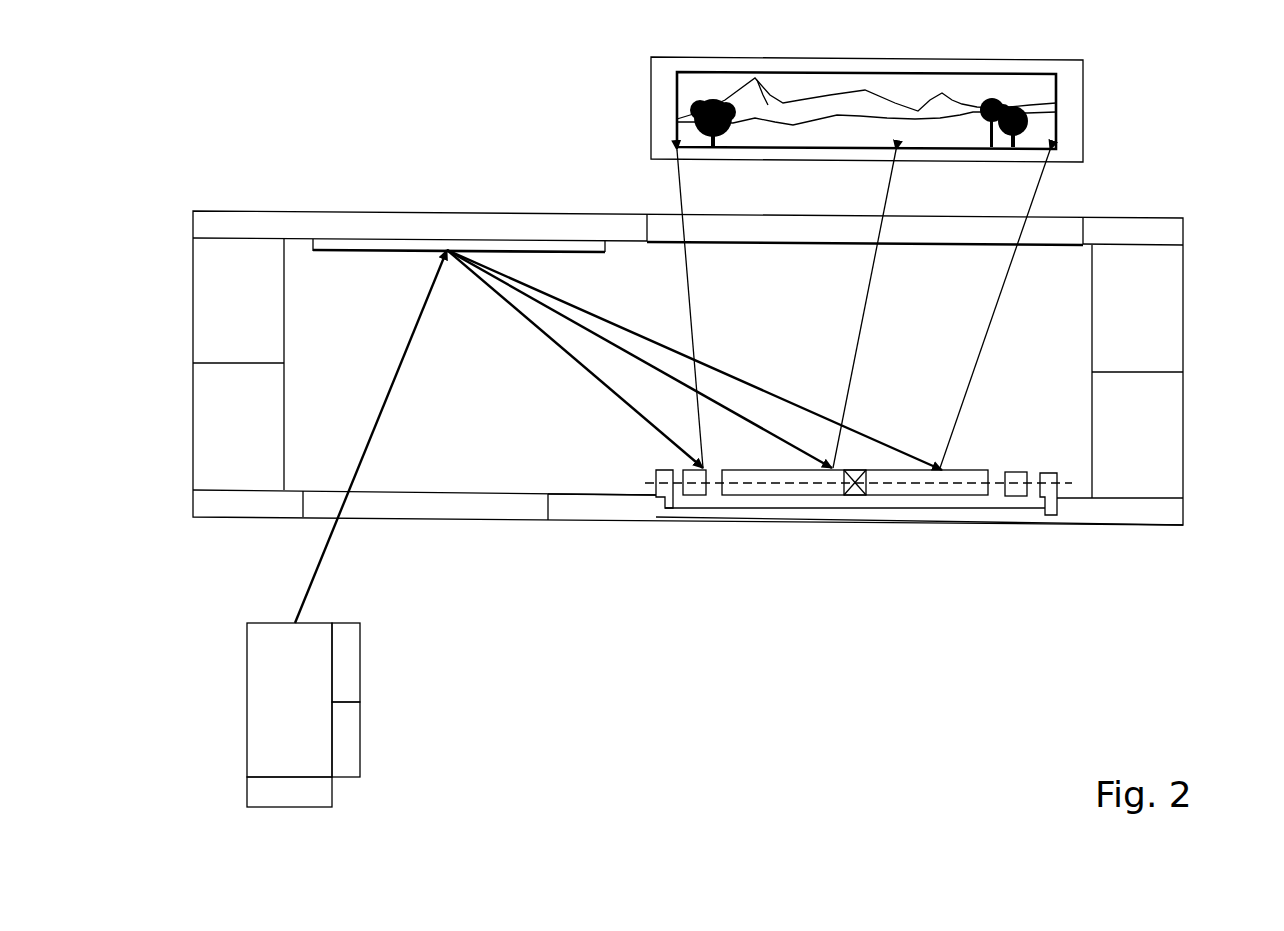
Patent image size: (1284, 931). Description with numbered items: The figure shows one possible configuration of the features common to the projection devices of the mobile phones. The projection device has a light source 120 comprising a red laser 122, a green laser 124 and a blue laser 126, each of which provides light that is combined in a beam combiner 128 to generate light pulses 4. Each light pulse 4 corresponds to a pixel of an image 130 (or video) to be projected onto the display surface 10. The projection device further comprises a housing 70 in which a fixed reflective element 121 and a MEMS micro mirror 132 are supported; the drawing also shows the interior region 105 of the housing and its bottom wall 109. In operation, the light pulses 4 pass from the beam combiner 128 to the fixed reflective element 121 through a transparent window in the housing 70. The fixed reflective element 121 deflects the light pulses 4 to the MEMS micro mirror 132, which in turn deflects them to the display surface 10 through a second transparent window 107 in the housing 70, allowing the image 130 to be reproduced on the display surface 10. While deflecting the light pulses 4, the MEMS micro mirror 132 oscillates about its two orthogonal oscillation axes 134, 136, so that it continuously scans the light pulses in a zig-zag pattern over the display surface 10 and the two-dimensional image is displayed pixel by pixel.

The light pulses 4 is at (380, 413).
The display surface 10 is at (1083, 152).
The housing 70 is at (1183, 302).
The interior space of housing 105 is at (455, 490).
The second transparent window 107 is at (707, 245).
The bottom wall 109 is at (1162, 527).
The light source 120 is at (322, 647).
The fixed reflective element 121 is at (342, 253).
The red laser 122 is at (360, 665).
The green laser 124 is at (360, 740).
The blue laser 126 is at (247, 795).
The beam combiner 128 is at (247, 705).
The image 130 is at (1056, 88).
The MEMS micro mirror 132 is at (947, 497).
The oscillation axis 134 is at (1067, 485).
The oscillation axis 136 is at (858, 497).